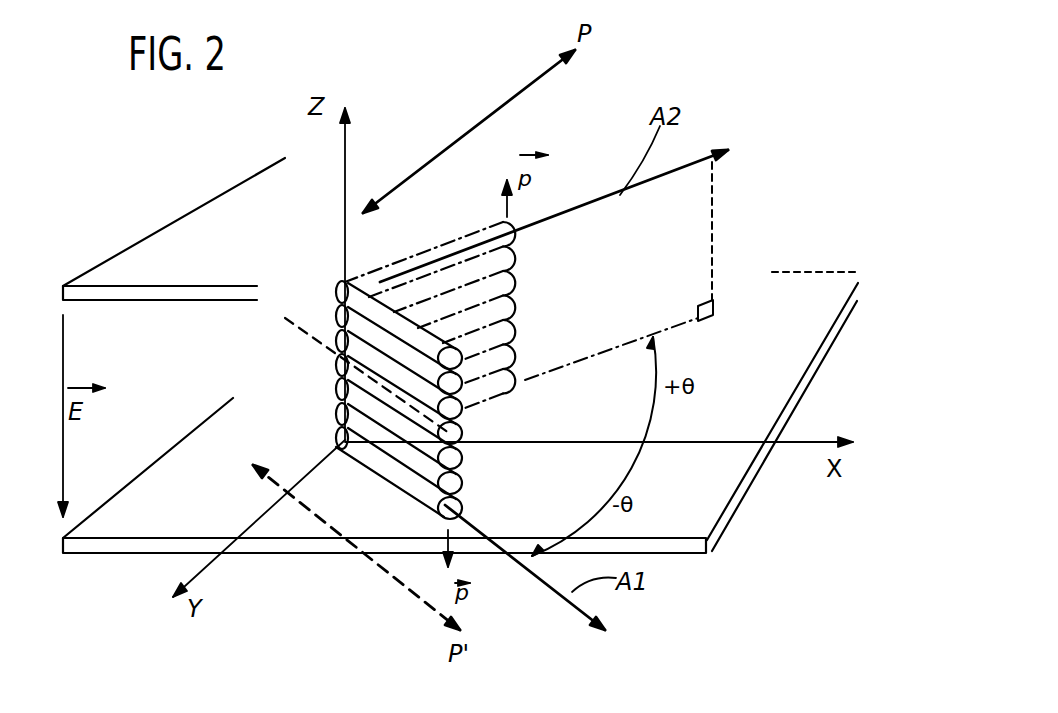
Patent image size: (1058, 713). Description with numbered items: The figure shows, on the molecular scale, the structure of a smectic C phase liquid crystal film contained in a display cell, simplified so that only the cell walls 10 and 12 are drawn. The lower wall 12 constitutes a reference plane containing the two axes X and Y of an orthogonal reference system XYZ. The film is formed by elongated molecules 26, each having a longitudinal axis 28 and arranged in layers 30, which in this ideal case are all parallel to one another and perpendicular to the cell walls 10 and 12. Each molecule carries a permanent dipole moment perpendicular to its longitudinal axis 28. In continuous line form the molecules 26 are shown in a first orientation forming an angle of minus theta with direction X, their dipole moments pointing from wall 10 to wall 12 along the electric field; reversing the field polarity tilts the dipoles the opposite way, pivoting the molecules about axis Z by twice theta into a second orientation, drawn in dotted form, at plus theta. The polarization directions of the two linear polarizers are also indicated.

The cell wall 10 is at (116, 263).
The cell wall 12 is at (122, 523).
The elongated molecules 26 is at (470, 468).
The longitudinal axis 28 is at (314, 341).
The layers 30 is at (417, 252).